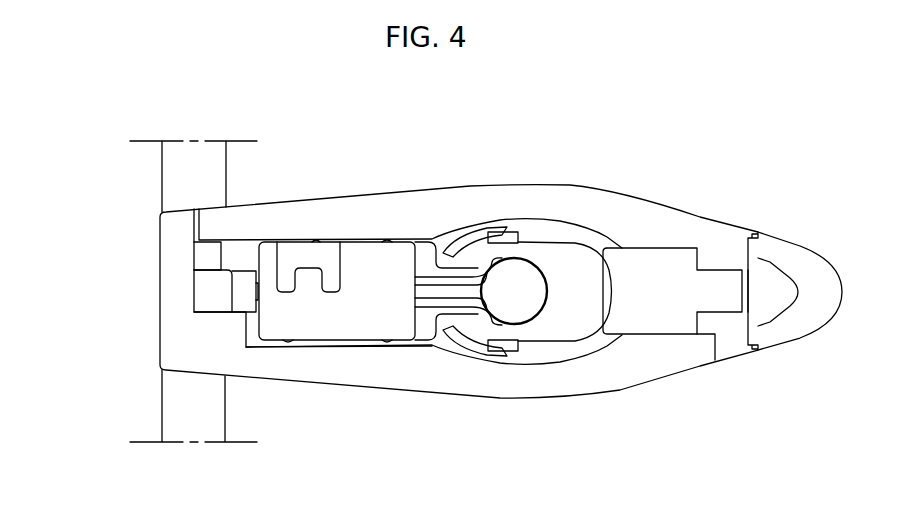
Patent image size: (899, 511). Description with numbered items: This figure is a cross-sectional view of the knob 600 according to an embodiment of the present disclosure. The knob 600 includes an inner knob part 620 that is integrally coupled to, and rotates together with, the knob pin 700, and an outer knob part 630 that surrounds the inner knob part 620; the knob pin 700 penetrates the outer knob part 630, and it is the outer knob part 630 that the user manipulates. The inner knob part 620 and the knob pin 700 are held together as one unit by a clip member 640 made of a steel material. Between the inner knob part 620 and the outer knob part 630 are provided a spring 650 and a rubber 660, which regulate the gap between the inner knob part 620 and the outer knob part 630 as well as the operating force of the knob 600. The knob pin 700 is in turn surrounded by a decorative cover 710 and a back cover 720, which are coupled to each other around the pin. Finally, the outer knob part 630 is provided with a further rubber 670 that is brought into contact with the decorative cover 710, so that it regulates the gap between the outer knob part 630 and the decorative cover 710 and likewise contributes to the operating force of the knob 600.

The knob 600 is at (697, 206).
The inner knob part 620 is at (387, 297).
The outer knob part 630 is at (395, 218).
The clip member 640 is at (453, 300).
The spring 650 is at (243, 292).
The rubber 660 is at (307, 258).
The rubber 670 is at (665, 303).
The knob pin 700 is at (528, 300).
The decorative cover 710 is at (573, 280).
The back cover 720 is at (477, 253).